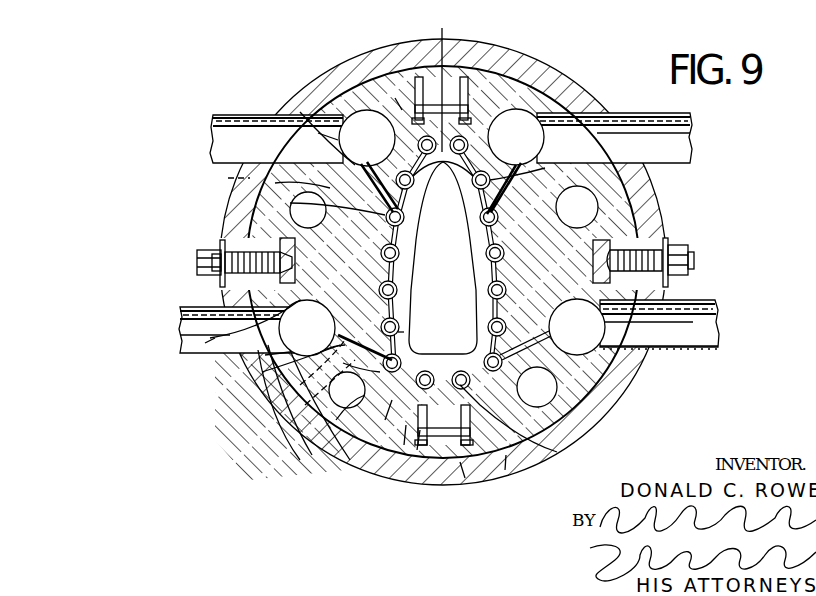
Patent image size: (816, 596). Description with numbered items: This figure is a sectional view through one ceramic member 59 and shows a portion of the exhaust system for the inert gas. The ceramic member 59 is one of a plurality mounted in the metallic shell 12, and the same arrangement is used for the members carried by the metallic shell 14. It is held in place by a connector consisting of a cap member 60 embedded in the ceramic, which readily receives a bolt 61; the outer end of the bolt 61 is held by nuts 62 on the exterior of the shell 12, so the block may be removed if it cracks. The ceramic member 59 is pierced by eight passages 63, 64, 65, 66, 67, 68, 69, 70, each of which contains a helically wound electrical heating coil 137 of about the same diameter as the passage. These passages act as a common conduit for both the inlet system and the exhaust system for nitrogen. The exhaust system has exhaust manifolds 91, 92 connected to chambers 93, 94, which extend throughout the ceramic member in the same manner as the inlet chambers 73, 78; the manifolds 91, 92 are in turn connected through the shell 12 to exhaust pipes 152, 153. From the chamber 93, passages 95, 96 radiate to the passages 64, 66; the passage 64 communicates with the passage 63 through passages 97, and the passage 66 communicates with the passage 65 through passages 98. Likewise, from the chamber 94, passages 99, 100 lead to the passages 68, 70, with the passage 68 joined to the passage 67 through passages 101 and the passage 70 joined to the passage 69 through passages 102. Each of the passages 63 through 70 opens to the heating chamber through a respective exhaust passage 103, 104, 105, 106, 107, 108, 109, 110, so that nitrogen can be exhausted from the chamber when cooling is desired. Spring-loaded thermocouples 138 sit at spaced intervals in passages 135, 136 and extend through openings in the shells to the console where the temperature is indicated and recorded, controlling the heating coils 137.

The metallic shell 12 is at (349, 55).
The metallic shell 14 is at (585, 82).
The ceramic member 59 is at (500, 82).
The cap member 60 is at (640, 285).
The bolt 61 is at (692, 255).
The nuts 62 is at (694, 266).
The passage 63 is at (505, 470).
The passage 64 is at (404, 445).
The passage 65 is at (347, 390).
The passage 66 is at (343, 363).
The passage 67 is at (185, 326).
The passage 68 is at (308, 210).
The passage 69 is at (276, 139).
The passage 70 is at (515, 161).
The chamber 73 is at (336, 420).
The chamber 78 is at (290, 203).
The exhaust manifold 91 is at (265, 355).
The exhaust manifold 92 is at (310, 115).
The chamber 93 is at (262, 372).
The chamber 94 is at (318, 133).
The passage 95 is at (385, 420).
The passage 96 is at (320, 352).
The passages 97 is at (417, 450).
The passages 98 is at (403, 303).
The passage 99 is at (275, 183).
The passage 100 is at (398, 102).
The passages 101 is at (221, 282).
The passages 102 is at (404, 137).
The exhaust passage 103 is at (557, 452).
The exhaust passage 104 is at (432, 446).
The exhaust passage 105 is at (404, 332).
The exhaust passage 106 is at (335, 330).
The exhaust passage 107 is at (210, 338).
The exhaust passage 108 is at (197, 263).
The exhaust passage 109 is at (368, 161).
The exhaust passage 110 is at (545, 168).
The passage 135 is at (300, 385).
The passage 136 is at (228, 178).
The electrical heating coils 137 is at (465, 478).
The thermocouples 138 is at (305, 405).
The exhaust pipe 152 is at (205, 343).
The exhaust pipe 153 is at (233, 132).